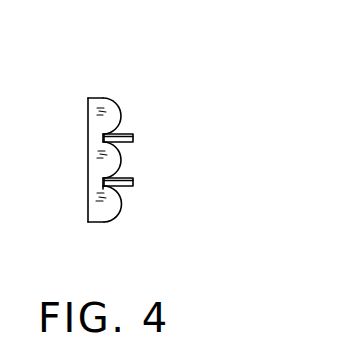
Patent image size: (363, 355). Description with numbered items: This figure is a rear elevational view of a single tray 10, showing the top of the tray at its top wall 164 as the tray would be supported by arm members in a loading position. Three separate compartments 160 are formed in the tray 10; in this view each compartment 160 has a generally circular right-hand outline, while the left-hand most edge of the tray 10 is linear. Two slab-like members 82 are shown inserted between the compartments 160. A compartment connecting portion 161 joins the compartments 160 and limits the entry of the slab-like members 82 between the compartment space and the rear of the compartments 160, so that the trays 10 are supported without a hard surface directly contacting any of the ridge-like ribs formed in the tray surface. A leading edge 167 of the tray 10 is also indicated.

The tray 10 is at (86, 72).
The compartment 160 is at (117, 133).
The slab-like member 82 is at (121, 134).
The compartment connecting portion 161 is at (100, 141).
The top wall 164 is at (98, 162).
The leading edge 167 is at (92, 180).